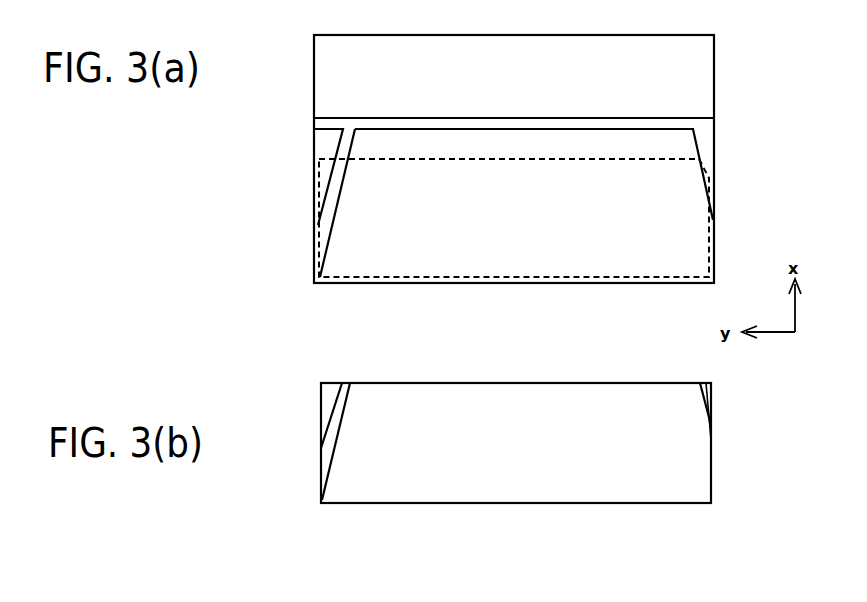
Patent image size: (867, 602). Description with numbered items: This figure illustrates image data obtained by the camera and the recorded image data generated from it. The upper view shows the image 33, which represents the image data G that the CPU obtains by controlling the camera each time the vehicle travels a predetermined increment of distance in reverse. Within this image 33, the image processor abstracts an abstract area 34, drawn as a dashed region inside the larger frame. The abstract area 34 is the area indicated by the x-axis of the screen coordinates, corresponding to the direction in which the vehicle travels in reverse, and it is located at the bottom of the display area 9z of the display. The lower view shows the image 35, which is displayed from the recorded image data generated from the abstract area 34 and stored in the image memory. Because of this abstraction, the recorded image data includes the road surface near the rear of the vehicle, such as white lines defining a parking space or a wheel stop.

In FIG. 3A, the image 33 is at (715, 49).
In FIG. 3A, the abstract area 34 is at (317, 199).
In FIG. 3A, the display area 9z is at (714, 175).
In FIG. 3B, the image 35 is at (515, 504).